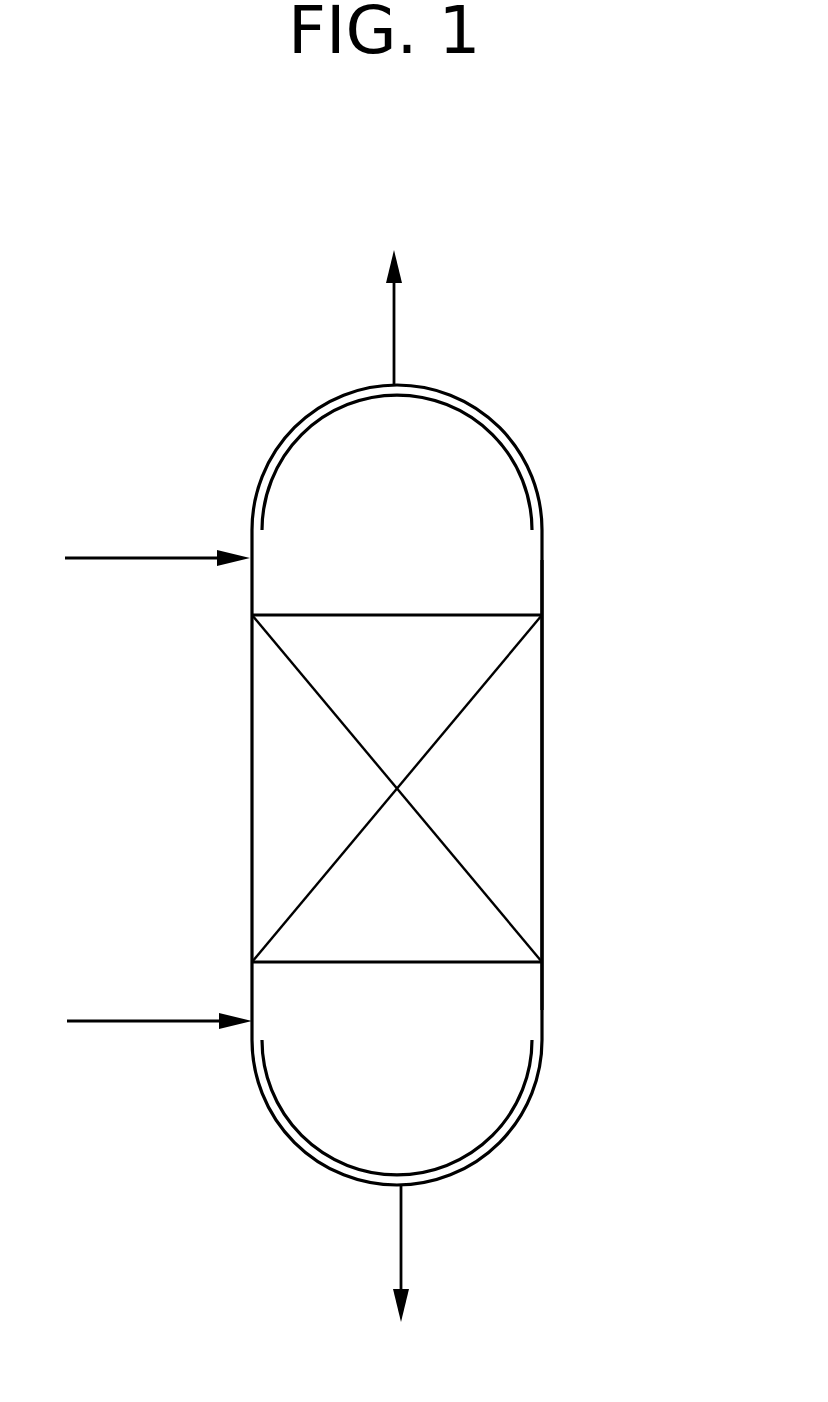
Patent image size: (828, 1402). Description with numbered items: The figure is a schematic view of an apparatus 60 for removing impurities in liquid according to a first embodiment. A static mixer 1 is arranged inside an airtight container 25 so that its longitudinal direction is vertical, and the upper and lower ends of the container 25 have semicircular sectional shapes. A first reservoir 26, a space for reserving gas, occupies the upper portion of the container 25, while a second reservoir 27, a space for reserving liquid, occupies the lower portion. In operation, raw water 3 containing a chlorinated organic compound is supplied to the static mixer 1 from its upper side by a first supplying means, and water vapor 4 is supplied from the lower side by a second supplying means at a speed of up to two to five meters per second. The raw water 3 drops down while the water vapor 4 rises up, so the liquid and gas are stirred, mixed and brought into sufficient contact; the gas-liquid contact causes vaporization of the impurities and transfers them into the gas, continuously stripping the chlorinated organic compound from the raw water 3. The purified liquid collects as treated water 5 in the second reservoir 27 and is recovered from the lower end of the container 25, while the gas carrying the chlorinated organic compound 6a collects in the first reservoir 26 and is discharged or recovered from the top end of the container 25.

The static mixer 1 is at (512, 737).
The raw water 3 is at (137, 558).
The water vapor 4 is at (133, 1021).
The treated water 5 is at (401, 1245).
The chlorinated organic compound 6a is at (394, 332).
The airtight container 25 is at (542, 567).
The first reservoir 26 is at (330, 437).
The second reservoir 27 is at (465, 1082).
The apparatus for removing impurities 60 is at (600, 858).